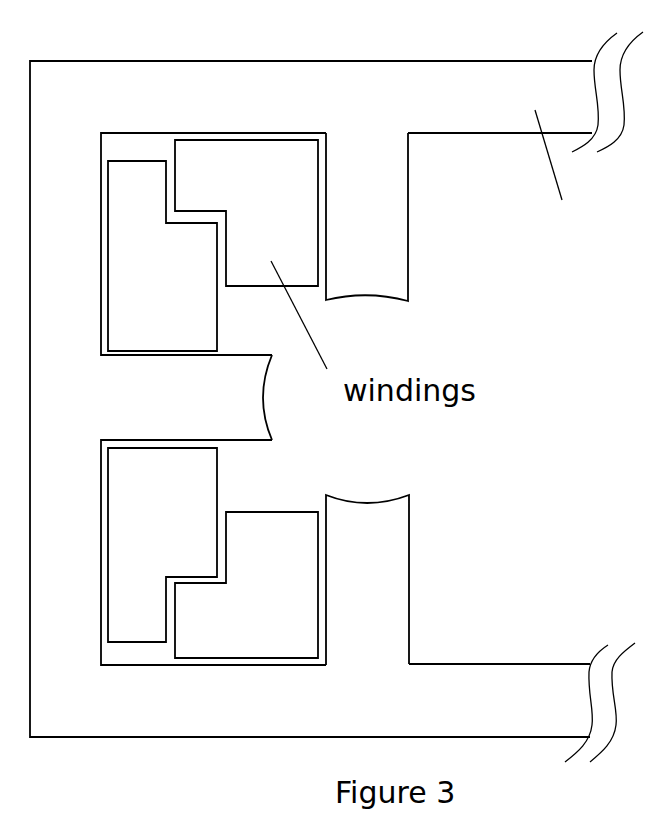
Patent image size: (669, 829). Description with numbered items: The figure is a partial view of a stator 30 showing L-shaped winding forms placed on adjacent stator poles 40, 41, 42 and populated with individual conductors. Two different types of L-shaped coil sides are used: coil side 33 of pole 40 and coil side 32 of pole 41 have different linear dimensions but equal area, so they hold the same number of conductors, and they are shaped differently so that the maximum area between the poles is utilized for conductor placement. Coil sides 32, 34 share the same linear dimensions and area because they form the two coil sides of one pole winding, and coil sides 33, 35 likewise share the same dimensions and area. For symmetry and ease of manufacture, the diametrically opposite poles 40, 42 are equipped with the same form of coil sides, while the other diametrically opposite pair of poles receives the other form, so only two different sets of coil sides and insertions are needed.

The stator 30 is at (450, 61).
The coil side 32 is at (139, 160).
The coil side 33 is at (176, 208).
The coil side 34 is at (217, 523).
The coil side 35 is at (271, 512).
The stator pole 40 is at (408, 286).
The stator pole 41 is at (264, 402).
The stator pole 42 is at (409, 615).